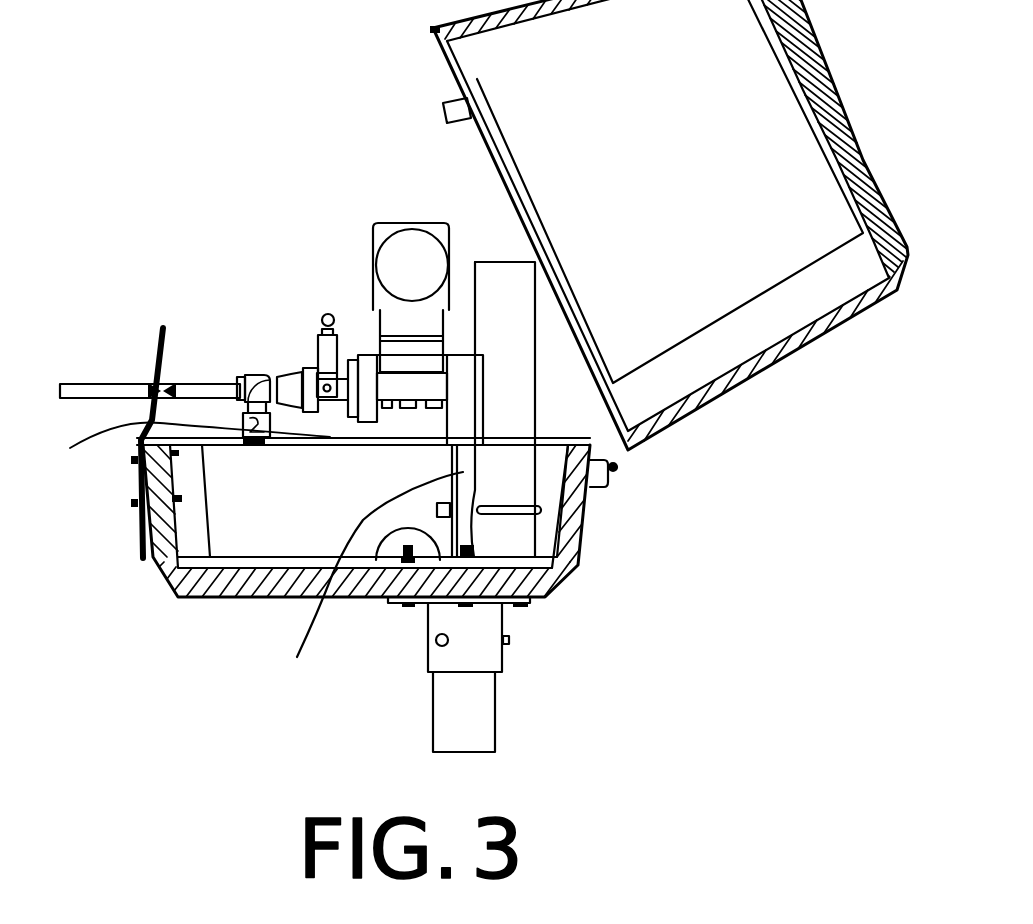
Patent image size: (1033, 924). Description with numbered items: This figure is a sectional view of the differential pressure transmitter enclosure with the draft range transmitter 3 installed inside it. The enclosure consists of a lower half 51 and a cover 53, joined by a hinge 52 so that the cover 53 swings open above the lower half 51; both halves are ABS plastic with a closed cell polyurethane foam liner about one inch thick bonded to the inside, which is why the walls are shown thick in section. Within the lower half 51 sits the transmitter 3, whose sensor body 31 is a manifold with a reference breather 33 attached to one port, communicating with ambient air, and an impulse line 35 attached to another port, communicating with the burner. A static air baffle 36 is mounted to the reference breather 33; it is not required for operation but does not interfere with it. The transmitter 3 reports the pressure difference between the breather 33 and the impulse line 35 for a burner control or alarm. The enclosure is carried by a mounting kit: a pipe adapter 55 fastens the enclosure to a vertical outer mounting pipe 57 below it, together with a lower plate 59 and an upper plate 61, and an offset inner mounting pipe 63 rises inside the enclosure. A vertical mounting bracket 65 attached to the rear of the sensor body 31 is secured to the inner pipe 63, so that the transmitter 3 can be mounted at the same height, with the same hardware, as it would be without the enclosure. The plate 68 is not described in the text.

The draft range transmitter 3 is at (396, 262).
The sensor body 31 is at (316, 366).
The reference breather 33 is at (250, 375).
The impulse line 35 is at (75, 386).
The static air baffle 36 is at (174, 447).
The lower half 51 is at (150, 563).
The hinge 52 is at (620, 470).
The cover 53 is at (852, 100).
The pipe adapter 55 is at (493, 658).
The outer mounting pipe 57 is at (480, 720).
The lower plate 59 is at (533, 600).
The upper plate 61 is at (378, 562).
The inner mounting pipe 63 is at (493, 287).
The vertical mounting bracket 65 is at (367, 582).
The plate 68 is at (158, 332).